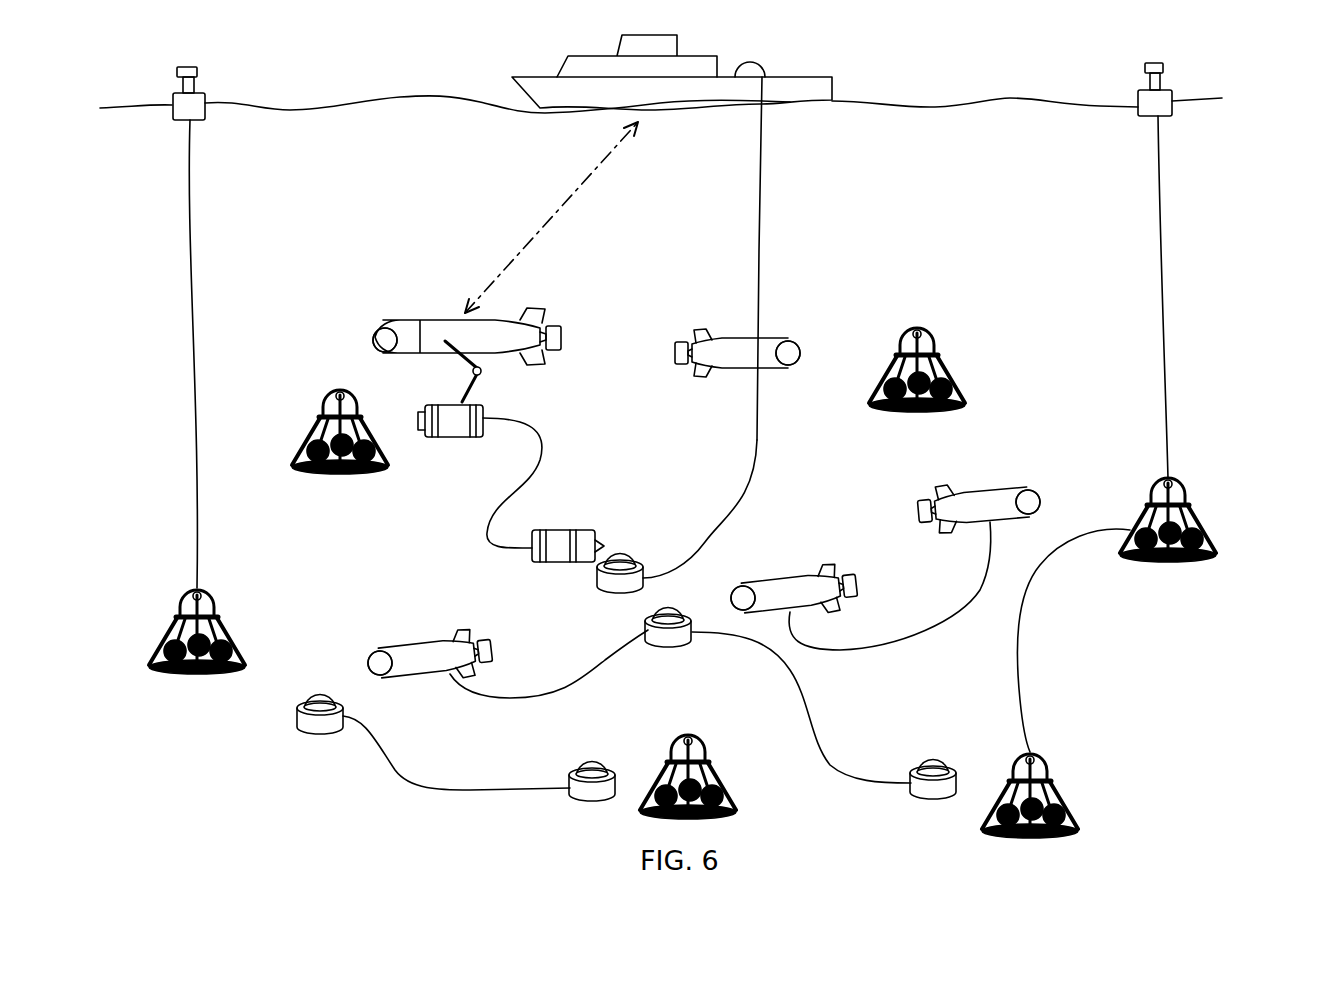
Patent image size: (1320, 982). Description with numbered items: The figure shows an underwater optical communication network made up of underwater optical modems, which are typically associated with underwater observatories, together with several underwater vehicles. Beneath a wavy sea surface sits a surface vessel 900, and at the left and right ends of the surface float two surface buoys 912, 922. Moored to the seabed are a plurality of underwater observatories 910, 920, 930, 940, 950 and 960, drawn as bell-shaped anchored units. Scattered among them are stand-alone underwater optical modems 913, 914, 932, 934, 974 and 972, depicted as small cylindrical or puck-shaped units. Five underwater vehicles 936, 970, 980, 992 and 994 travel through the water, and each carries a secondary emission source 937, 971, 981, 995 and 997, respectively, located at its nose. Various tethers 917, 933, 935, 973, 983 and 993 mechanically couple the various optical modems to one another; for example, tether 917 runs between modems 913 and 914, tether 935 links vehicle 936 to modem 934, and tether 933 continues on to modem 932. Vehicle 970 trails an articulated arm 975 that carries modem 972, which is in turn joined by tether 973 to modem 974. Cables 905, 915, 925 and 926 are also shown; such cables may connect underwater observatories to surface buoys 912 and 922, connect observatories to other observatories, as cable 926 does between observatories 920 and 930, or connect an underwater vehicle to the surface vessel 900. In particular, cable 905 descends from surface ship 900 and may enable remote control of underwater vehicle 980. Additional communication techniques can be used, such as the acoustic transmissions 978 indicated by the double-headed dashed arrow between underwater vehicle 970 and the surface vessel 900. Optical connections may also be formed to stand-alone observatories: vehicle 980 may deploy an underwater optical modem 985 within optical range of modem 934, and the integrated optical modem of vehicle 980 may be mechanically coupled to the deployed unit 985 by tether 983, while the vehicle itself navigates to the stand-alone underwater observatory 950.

The surface vessel 900 is at (798, 77).
The cable 905 is at (762, 226).
The underwater observatory 910 is at (201, 590).
The surface buoy 912 is at (203, 92).
The stand-alone underwater optical modem 913 is at (298, 734).
The stand-alone underwater optical modem 914 is at (572, 798).
The cable 915 is at (189, 232).
The tether 917 is at (410, 786).
The underwater observatory 920 is at (1172, 478).
The surface buoy 922 is at (1172, 92).
The cable 925 is at (1169, 215).
The cable 926 is at (1020, 603).
The underwater observatory 930 is at (1036, 753).
The stand-alone underwater optical modem 932 is at (918, 800).
The tether 933 is at (808, 709).
The stand-alone underwater optical modem 934 is at (652, 648).
The tether 935 is at (486, 700).
The underwater vehicle 936 is at (408, 645).
The secondary emission source 937 is at (367, 663).
The underwater observatory 940 is at (700, 740).
The underwater observatory 950 is at (918, 328).
The underwater observatory 960 is at (332, 391).
The underwater vehicle 970 is at (510, 318).
The secondary emission source 971 is at (378, 338).
The stand-alone underwater optical modem 972 is at (462, 438).
The tether 973 is at (486, 533).
The stand-alone underwater optical modem 974 is at (555, 530).
The articulated arm 975 is at (482, 373).
The acoustic transmissions 978 is at (560, 205).
The underwater vehicle 980 is at (778, 340).
The secondary emission source 981 is at (796, 352).
The tether 983 is at (760, 437).
The underwater optical modem 985 is at (605, 593).
The underwater vehicle 992 is at (786, 578).
The tether 993 is at (845, 649).
The underwater vehicle 994 is at (995, 488).
The secondary emission source 995 is at (739, 596).
The secondary emission source 997 is at (1042, 501).